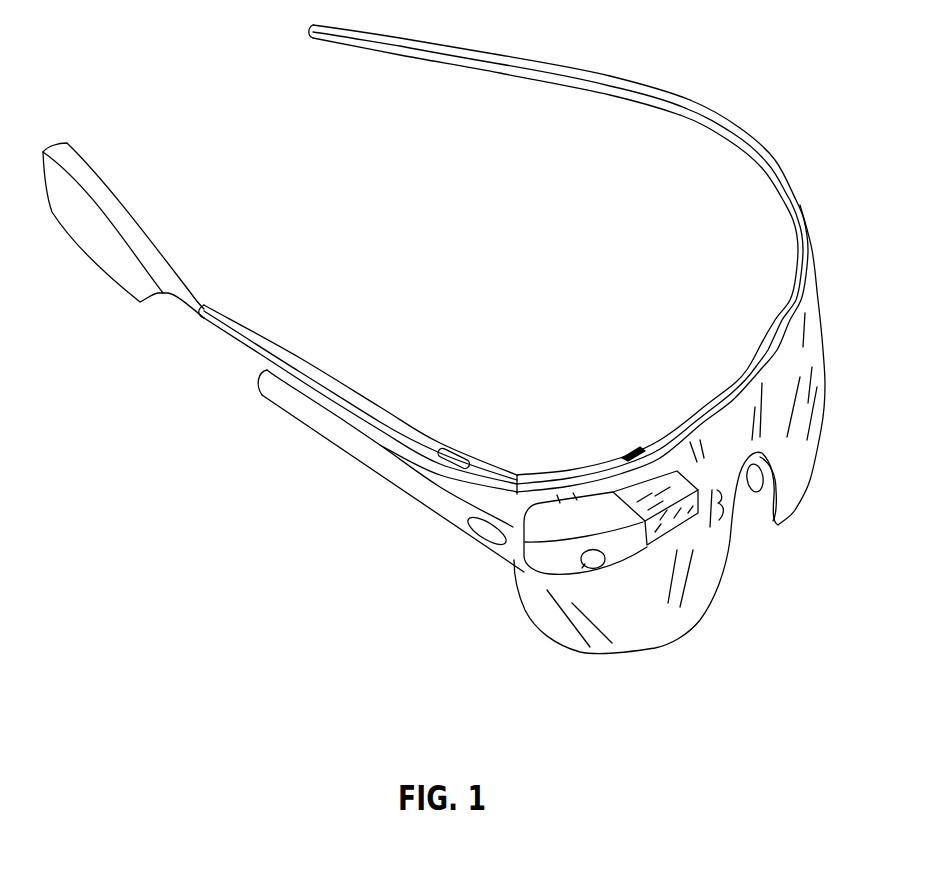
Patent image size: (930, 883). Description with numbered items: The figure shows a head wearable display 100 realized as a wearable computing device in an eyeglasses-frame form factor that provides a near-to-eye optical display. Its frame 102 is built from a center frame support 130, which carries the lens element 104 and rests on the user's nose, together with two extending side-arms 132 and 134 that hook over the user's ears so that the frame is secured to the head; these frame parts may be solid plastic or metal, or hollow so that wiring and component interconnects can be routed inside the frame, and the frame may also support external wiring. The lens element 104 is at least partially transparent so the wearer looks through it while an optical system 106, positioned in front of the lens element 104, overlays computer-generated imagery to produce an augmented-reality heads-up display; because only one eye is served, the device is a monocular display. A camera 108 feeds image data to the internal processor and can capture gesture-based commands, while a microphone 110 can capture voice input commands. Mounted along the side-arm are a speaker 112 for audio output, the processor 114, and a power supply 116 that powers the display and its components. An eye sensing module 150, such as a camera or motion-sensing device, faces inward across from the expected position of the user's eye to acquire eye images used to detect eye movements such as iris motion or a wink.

The head wearable display 100 is at (600, 160).
The frame 102 is at (558, 264).
The lens element 104 is at (652, 613).
The optical system 106 is at (677, 471).
The camera 108 is at (590, 563).
The microphone 110 is at (485, 535).
The speaker 112 is at (302, 412).
The processor 114 is at (123, 245).
The power supply 116 is at (93, 243).
The center frame support 130 is at (800, 277).
The side-arm 132 is at (558, 75).
The side-arm 134 is at (237, 321).
The eye sensing module 150 is at (630, 452).